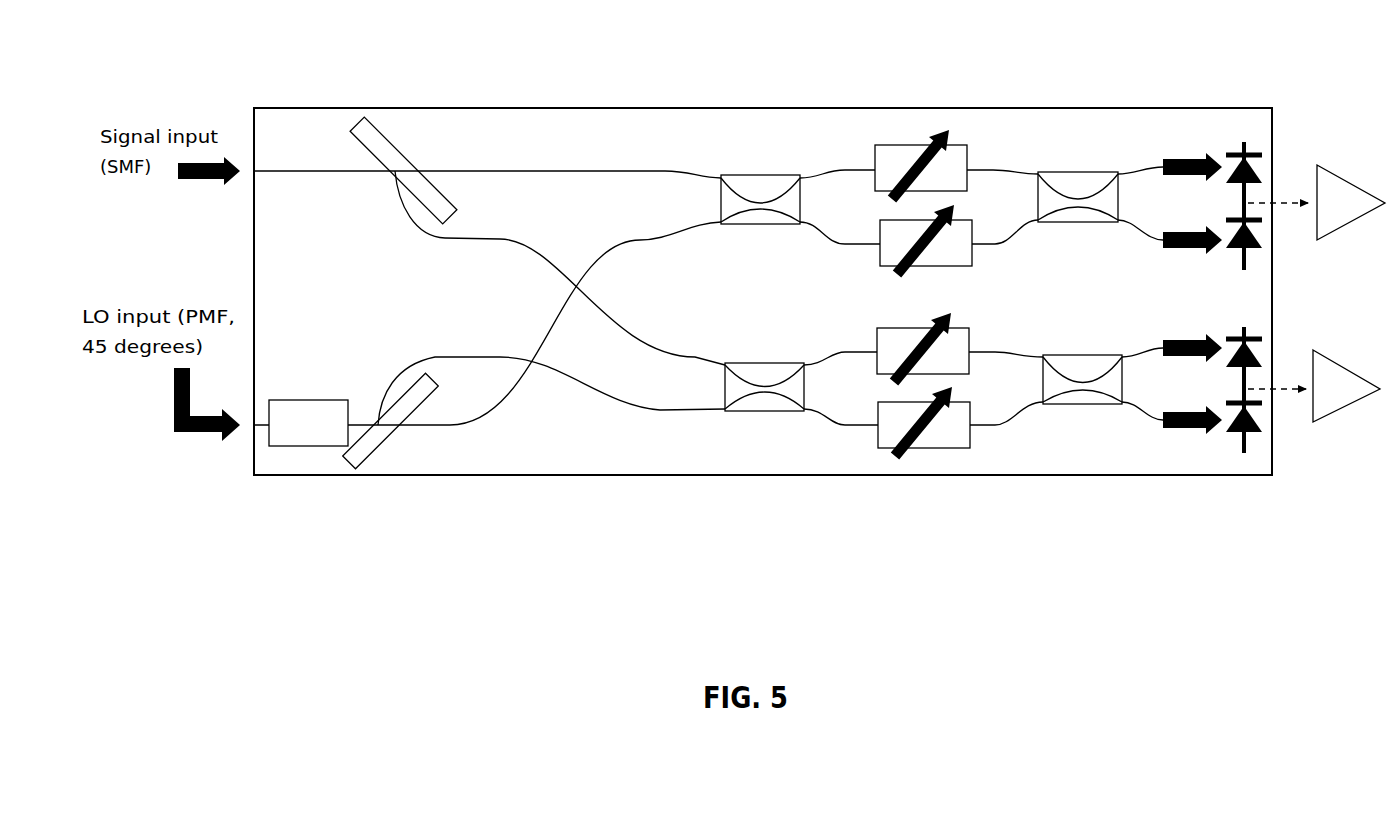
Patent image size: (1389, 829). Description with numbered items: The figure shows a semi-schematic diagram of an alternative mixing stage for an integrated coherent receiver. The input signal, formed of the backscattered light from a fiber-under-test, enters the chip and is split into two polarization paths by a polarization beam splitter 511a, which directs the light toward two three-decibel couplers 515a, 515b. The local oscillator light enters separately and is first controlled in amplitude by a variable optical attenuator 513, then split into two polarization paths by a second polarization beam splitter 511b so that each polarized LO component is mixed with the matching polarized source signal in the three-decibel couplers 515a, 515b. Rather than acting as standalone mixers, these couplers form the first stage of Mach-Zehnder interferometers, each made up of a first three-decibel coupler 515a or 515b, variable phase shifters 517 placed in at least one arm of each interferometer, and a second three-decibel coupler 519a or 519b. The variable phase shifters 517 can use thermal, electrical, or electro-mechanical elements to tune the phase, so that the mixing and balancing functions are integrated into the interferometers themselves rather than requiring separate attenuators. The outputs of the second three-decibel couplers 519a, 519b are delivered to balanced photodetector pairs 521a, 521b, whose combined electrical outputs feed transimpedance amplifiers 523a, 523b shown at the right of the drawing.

The polarization beam splitter 511a is at (398, 151).
The polarization beam splitter 511b is at (388, 440).
The variable optical attenuator 513 is at (304, 398).
The 3 dB coupler 515a is at (766, 158).
The 3 dB coupler 515b is at (775, 426).
The variable phase shifter 517 is at (923, 94).
The second 3 dB coupler 519a is at (1070, 160).
The second 3 dB coupler 519b is at (1080, 428).
The balanced photodetector pair (upper) 521a is at (1225, 131).
The balanced photodetector pair (lower) 521b is at (1220, 456).
The transimpedance amplifier (upper) 523a is at (1346, 180).
The transimpedance amplifier (lower) 523b is at (1346, 368).